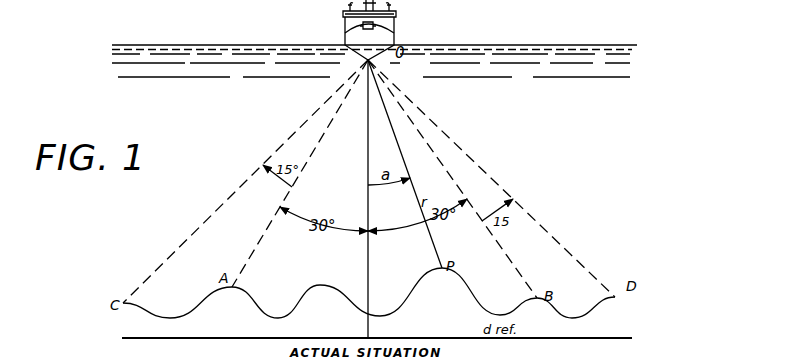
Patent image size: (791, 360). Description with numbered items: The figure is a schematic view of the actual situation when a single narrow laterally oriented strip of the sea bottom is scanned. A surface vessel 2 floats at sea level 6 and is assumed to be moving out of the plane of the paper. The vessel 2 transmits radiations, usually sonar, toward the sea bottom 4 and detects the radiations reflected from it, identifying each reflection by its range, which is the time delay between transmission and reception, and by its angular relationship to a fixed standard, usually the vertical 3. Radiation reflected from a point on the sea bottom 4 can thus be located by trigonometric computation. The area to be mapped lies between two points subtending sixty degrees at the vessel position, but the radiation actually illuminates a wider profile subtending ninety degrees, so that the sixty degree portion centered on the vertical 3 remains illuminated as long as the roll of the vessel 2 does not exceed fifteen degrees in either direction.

The surface vessel 2 is at (387, 38).
The vertical 3 is at (368, 153).
The sea bottom 4 is at (268, 310).
The sea level 6 is at (549, 45).